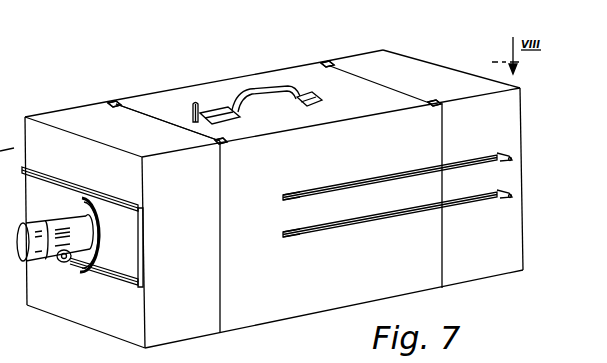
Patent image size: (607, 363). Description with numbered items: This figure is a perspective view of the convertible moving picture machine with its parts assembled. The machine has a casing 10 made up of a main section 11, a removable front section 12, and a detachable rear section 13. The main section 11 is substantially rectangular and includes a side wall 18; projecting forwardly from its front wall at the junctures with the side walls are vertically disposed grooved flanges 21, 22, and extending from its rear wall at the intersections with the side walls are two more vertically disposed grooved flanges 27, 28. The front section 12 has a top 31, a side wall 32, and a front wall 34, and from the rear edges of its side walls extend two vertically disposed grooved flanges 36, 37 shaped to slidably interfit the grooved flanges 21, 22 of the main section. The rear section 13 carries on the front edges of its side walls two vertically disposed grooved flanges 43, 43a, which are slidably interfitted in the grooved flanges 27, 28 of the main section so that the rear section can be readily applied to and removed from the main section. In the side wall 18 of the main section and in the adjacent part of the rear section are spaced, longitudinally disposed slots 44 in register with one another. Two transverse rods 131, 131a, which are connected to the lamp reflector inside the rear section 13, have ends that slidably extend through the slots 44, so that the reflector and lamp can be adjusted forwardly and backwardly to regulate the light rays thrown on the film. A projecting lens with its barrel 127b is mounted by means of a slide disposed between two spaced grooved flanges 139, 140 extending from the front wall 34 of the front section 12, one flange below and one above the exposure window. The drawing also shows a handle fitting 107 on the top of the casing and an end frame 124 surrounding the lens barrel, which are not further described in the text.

The casing 10 is at (522, 90).
The main section 11 is at (240, 78).
The removable front section 12 is at (67, 110).
The detachable rear section 13 is at (389, 51).
The side wall 18 is at (310, 295).
The grooved flange 21 is at (222, 144).
The grooved flange 22 is at (112, 102).
The grooved flange 27 is at (435, 106).
The grooved flange 28 is at (322, 64).
The top 31 is at (140, 128).
The side wall 32 is at (183, 323).
The front wall 34 is at (82, 308).
The grooved flange 36 is at (216, 140).
The grooved flange 37 is at (119, 108).
The grooved flange 43 is at (432, 101).
The grooved flange 43a is at (334, 67).
The slots 44 is at (282, 233).
The handle pin 107 is at (195, 101).
The opening frame 124 is at (128, 248).
The barrel 127b is at (63, 244).
The transverse rod 131 is at (513, 153).
The transverse rod 131a is at (515, 194).
The grooved flange 139 is at (58, 188).
The grooved flange 140 is at (115, 278).